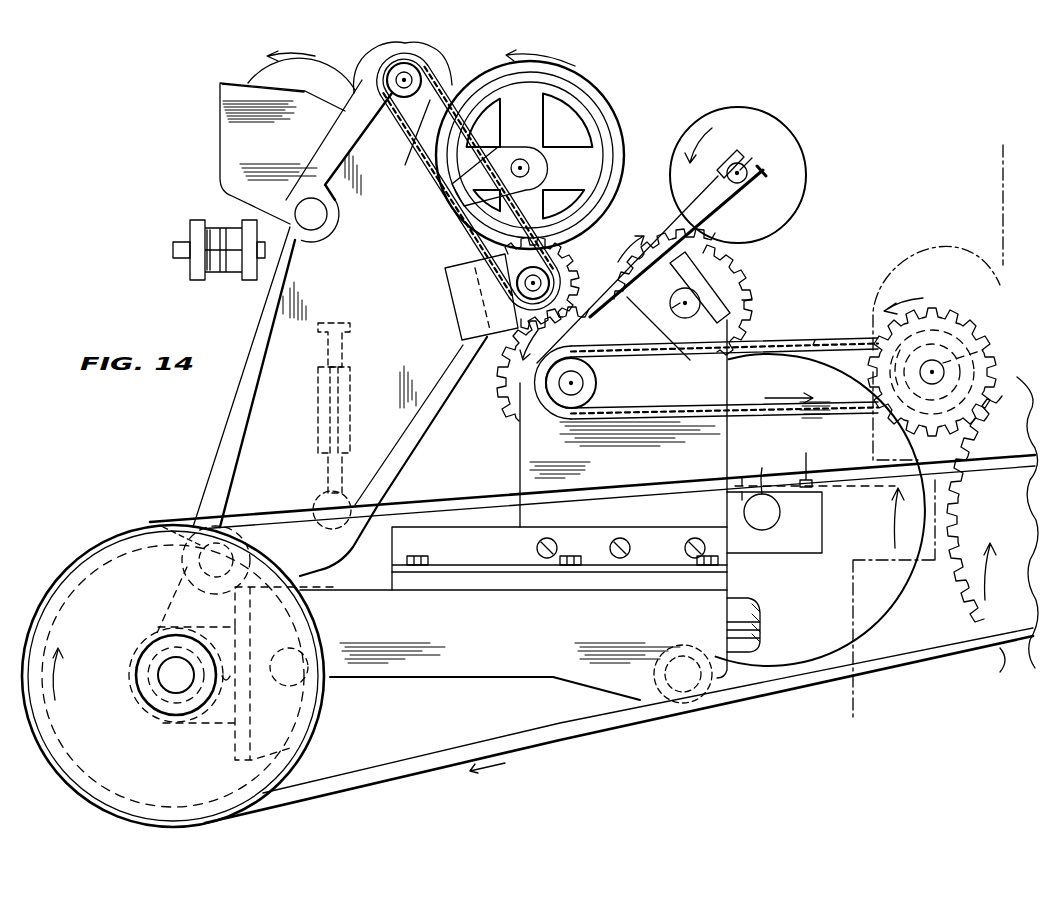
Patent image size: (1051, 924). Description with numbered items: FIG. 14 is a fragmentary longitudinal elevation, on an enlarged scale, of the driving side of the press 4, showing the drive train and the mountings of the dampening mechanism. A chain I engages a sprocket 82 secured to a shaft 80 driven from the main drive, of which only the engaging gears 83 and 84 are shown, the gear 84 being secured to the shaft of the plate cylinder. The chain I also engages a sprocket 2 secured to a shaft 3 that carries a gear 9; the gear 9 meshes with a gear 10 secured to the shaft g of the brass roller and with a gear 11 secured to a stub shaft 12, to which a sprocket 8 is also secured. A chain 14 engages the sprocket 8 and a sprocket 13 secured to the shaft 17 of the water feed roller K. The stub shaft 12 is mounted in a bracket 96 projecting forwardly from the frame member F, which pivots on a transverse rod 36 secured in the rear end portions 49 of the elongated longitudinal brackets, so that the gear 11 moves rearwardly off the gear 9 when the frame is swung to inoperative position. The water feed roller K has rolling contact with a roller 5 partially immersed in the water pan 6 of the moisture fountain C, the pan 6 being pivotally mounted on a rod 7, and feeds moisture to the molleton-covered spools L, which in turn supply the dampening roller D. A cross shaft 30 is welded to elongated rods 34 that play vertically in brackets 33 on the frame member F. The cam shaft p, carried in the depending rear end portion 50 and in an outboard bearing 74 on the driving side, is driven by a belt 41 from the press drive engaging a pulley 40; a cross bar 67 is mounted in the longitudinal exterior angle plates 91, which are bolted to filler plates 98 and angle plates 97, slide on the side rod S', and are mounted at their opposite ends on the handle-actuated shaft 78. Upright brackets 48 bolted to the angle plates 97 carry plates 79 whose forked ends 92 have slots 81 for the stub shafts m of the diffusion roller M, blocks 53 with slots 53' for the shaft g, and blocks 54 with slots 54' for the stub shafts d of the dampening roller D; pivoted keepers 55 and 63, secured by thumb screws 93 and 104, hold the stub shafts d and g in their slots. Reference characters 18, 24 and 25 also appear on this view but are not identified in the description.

The sprocket 2 is at (598, 390).
The shaft 3 is at (570, 396).
The press 4 is at (997, 262).
The roller 5 is at (272, 73).
The water pan 6 is at (219, 91).
The rod 7 is at (327, 216).
The sprocket 8 is at (503, 274).
The gear 9 is at (498, 379).
The gear 10 is at (745, 273).
The gear 11 is at (575, 294).
The stub shaft 12 is at (566, 273).
The sprocket 13 is at (402, 117).
The chain 14 is at (430, 177).
The shaft 17 is at (412, 78).
The hub 18 is at (532, 170).
The roller shaft 24 is at (180, 240).
The roller 25 is at (215, 283).
The cross shaft 30 is at (320, 497).
The bracket 33 is at (351, 374).
The elongated rod 34 is at (343, 342).
The transverse rod 36 is at (163, 527).
The pulley 40 is at (52, 588).
The belt 41 is at (455, 752).
The upright side bracket 48 is at (520, 470).
The rear end portion 49 is at (200, 561).
The depending rear end portion 50 is at (145, 677).
The block 53 is at (666, 336).
The slot 53' is at (643, 318).
The block 54 is at (794, 523).
The slot 54' is at (802, 512).
The pivoted keeper 55 is at (738, 478).
The pivoted keeper 63 is at (696, 257).
The cross bar 67 is at (285, 650).
The outboard bearing 74 is at (142, 708).
The handle-actuated shaft 78 is at (690, 656).
The plate 79 is at (690, 230).
The shaft 80 is at (939, 365).
The slot 81 is at (763, 174).
The sprocket 82 is at (988, 354).
The gear 83 is at (937, 307).
The gear 84 is at (960, 442).
The exterior angle plate 91 is at (410, 672).
The forked end 92 is at (720, 177).
The thumb screw 93 is at (810, 460).
The bracket 96 is at (455, 290).
The angle plate 97 is at (393, 550).
The filler plate 98 is at (397, 582).
The thumb screw 104 is at (750, 309).
The moisture fountain C is at (220, 117).
The dampening roller D is at (903, 580).
The frame member F is at (222, 430).
The chain I is at (814, 344).
The water feed roller K is at (360, 57).
The spool L is at (612, 124).
The diffusion roller M is at (790, 142).
The longitudinal side rod S' is at (764, 625).
The cam shaft p is at (190, 676).
The shaft g is at (695, 295).
The stub shaft d is at (768, 472).
The stub shaft m is at (754, 153).